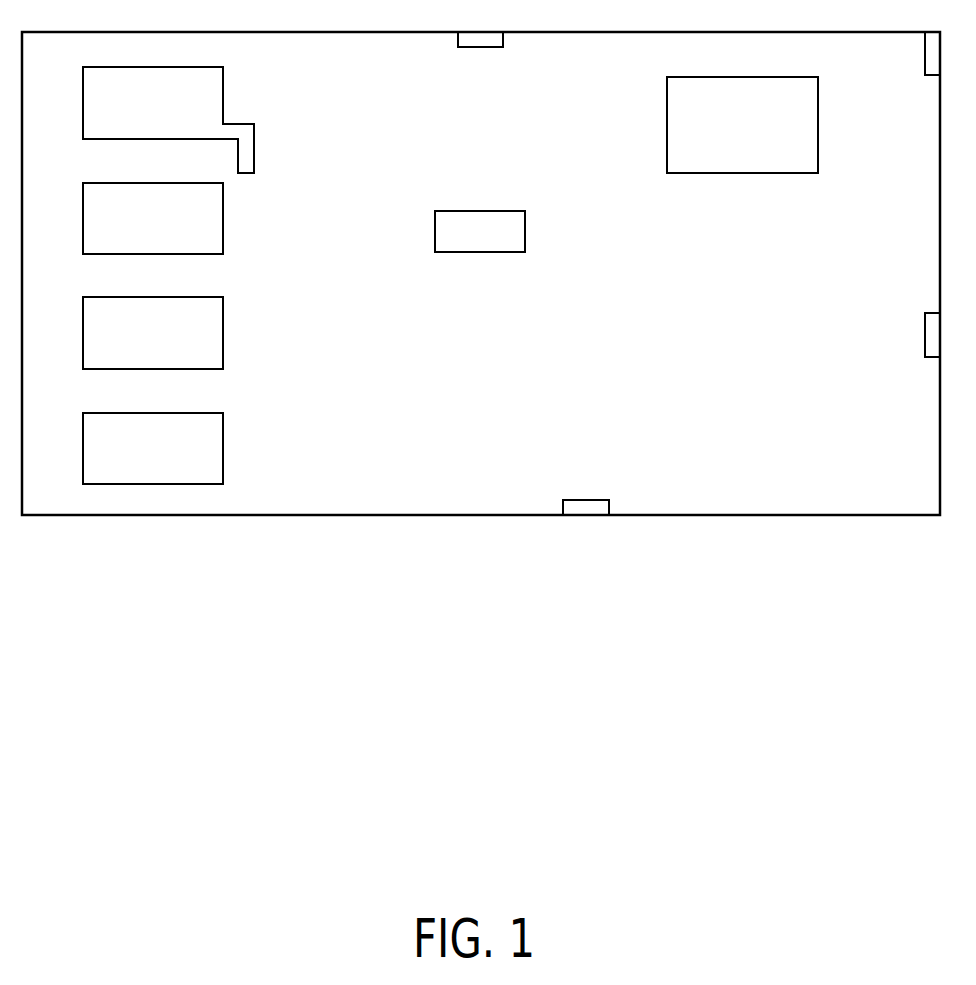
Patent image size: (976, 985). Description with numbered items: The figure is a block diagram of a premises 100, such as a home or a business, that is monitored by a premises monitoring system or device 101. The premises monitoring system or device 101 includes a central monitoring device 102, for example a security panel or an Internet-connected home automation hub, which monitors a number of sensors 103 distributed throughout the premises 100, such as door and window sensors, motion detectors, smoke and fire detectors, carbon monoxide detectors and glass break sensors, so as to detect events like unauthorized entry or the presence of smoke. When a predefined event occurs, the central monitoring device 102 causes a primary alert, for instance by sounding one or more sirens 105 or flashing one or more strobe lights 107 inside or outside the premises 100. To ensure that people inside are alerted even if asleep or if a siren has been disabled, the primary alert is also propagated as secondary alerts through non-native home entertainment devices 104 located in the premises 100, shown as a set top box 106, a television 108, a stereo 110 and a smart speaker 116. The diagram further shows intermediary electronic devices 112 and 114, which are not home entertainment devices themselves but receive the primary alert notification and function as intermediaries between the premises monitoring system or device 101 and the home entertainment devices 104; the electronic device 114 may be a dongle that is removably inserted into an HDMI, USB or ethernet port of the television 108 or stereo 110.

The premises 100 is at (742, 515).
The premises monitoring system or device 101 is at (693, 257).
The central monitoring device 102 is at (755, 77).
The sensors 103 is at (479, 47).
The home entertainment devices 104 is at (312, 295).
The sirens 105 is at (932, 75).
The set top box 106 is at (160, 183).
The strobe lights 107 is at (595, 500).
The television 108 is at (160, 67).
The stereo 110 is at (160, 297).
The intermediary electronic device 112 is at (463, 211).
The intermediary electronic device 114 is at (246, 173).
The smart speaker 116 is at (160, 413).